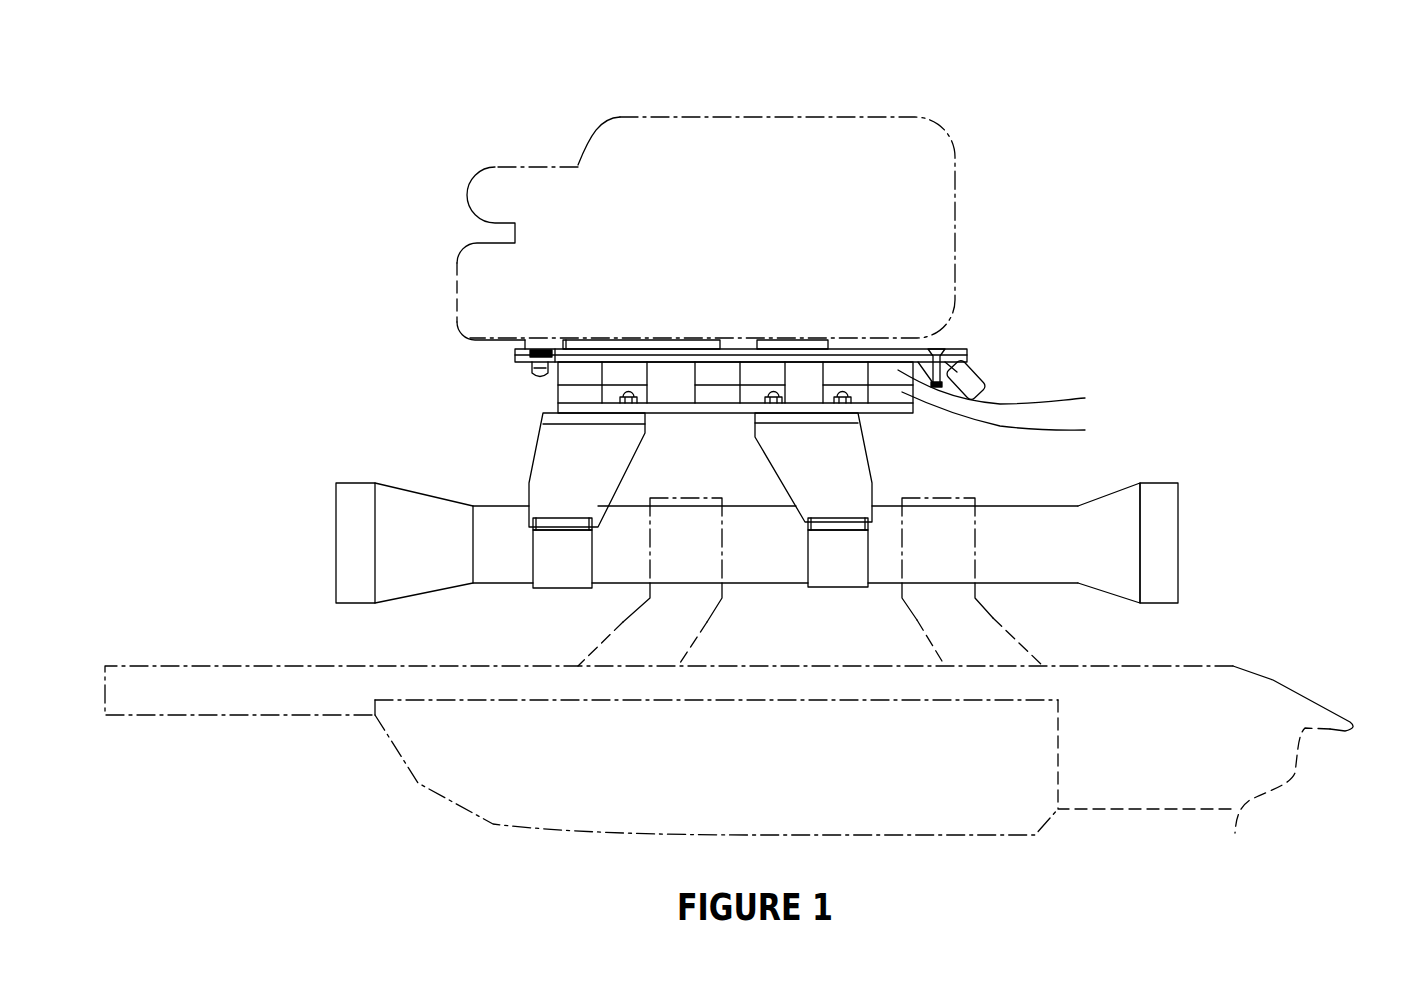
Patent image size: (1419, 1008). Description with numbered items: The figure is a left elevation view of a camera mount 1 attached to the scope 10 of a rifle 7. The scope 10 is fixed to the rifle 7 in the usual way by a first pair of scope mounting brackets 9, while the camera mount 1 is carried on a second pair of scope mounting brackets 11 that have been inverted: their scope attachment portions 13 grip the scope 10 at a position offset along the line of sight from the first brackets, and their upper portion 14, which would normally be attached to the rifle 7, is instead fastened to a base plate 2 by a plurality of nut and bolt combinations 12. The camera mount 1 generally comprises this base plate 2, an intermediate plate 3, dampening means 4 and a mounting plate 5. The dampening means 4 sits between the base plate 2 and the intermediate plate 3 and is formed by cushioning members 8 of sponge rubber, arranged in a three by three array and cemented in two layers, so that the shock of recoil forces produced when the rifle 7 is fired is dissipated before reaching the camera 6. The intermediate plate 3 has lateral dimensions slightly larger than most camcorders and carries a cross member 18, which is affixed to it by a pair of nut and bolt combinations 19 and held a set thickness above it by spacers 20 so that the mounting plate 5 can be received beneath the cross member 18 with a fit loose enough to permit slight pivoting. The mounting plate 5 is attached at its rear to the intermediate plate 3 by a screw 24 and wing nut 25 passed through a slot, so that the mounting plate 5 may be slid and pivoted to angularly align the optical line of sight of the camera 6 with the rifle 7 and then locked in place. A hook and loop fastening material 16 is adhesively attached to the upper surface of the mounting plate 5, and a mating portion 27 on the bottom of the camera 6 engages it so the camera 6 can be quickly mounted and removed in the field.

The camera mount 1 is at (1050, 197).
The base plate 2 is at (565, 407).
The intermediate plate 3 is at (515, 349).
The dampening means 4 is at (550, 393).
The mounting plate 5 is at (898, 350).
The camera 6 is at (567, 197).
The rifle 7 is at (1228, 712).
The cushioning members 8 is at (1001, 406).
The first pair of scope mounting brackets 9 is at (665, 600).
The scope 10 is at (357, 483).
The second pair of scope mounting brackets 11 is at (853, 492).
The nut and bolt combinations 12 is at (622, 405).
The scope attachment portions 13 is at (842, 552).
The upper portion 14 is at (847, 437).
The hook and loop fastening material 16 is at (835, 348).
The cross member 18 is at (527, 342).
The nut and bolt combinations 19 is at (531, 368).
The spacers 20 is at (522, 346).
The screw 24 is at (937, 353).
The wing nut 25 is at (967, 378).
The mating portion 27 is at (817, 340).